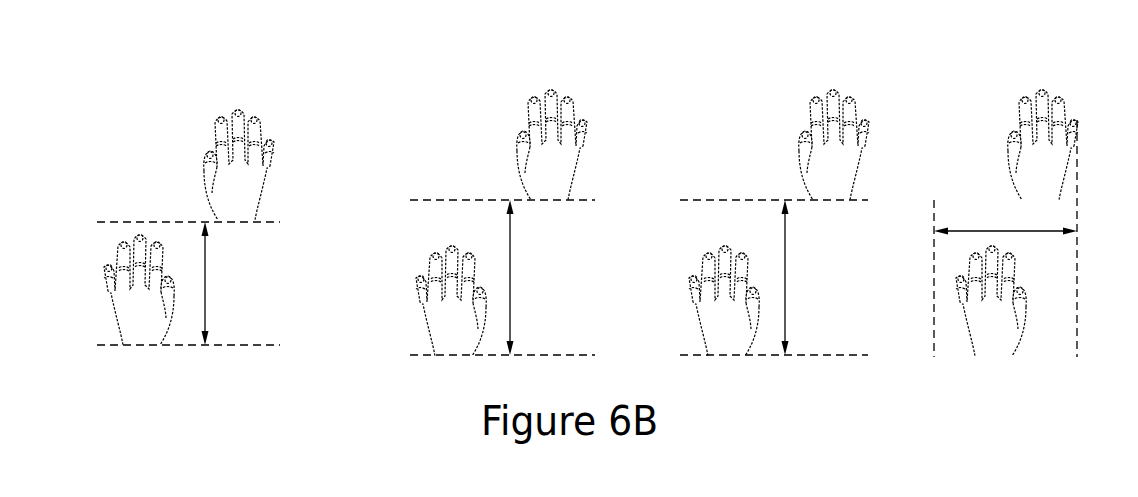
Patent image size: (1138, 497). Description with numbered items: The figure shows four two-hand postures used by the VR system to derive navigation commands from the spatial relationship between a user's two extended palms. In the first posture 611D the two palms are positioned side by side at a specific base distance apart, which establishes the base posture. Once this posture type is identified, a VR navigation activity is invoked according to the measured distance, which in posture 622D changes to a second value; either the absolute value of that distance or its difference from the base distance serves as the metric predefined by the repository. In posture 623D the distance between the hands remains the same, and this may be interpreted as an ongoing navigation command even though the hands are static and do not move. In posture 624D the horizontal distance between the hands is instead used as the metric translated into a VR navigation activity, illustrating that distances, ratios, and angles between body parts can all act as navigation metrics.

The first hand gesture pair with vertical separation D1 611D is at (200, 82).
The posture 622D is at (510, 82).
The posture 623D is at (800, 82).
The posture 624D is at (1029, 82).